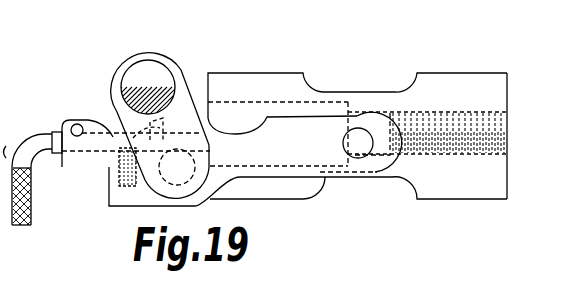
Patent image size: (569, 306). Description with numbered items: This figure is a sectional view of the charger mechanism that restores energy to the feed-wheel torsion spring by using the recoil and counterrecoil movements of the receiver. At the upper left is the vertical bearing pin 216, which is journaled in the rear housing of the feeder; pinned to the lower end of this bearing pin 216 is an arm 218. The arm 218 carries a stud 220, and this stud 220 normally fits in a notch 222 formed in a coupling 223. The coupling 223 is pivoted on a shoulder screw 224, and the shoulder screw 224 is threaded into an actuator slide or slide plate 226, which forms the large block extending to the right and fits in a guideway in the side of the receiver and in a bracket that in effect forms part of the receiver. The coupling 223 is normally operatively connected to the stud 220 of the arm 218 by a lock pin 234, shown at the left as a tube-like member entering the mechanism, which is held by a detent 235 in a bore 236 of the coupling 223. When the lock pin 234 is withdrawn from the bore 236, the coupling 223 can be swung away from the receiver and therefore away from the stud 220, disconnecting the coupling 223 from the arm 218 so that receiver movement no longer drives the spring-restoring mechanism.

The vertical bearing pin 216 is at (126, 76).
The arm 218 is at (112, 207).
The stud 220 is at (190, 163).
The notch 222 is at (180, 130).
The coupling 223 is at (253, 176).
The shoulder screw 224 is at (358, 133).
The actuator slide or slide plate 226 is at (442, 74).
The lock pin 234 is at (32, 179).
The detent 235 is at (118, 127).
The bore 236 is at (88, 150).